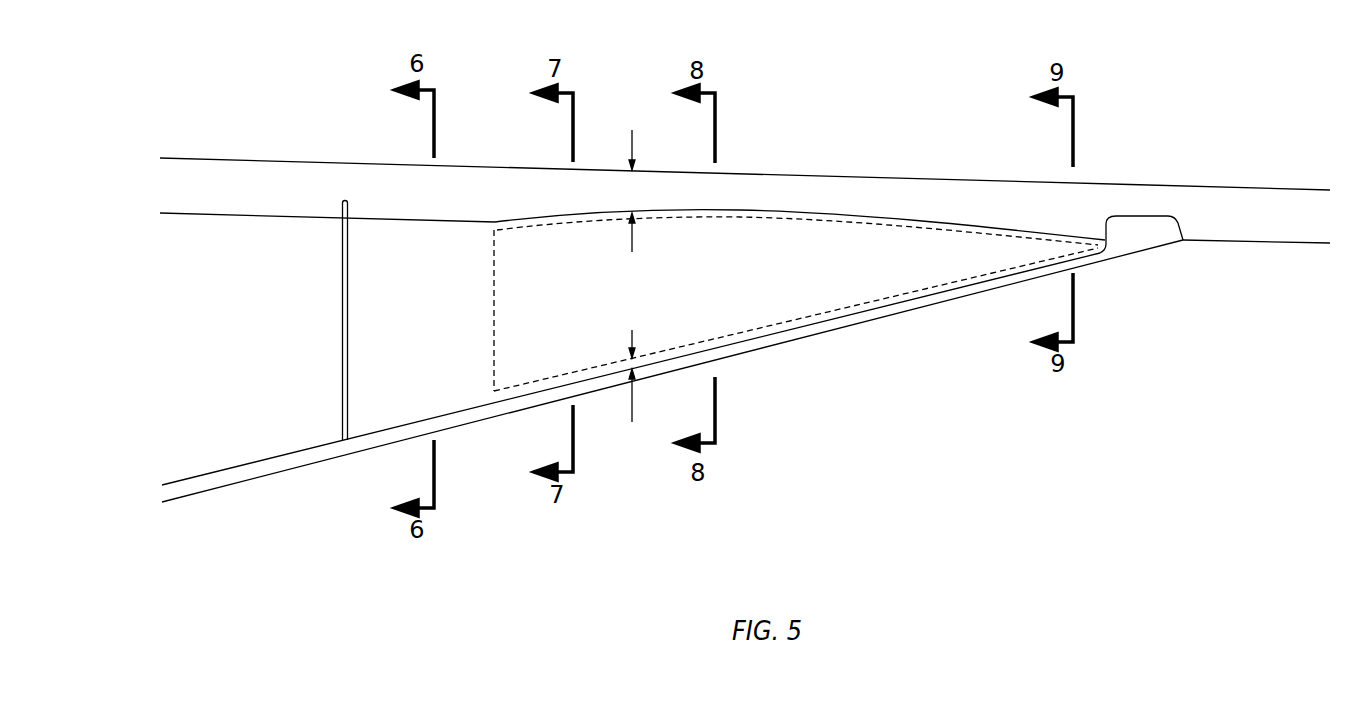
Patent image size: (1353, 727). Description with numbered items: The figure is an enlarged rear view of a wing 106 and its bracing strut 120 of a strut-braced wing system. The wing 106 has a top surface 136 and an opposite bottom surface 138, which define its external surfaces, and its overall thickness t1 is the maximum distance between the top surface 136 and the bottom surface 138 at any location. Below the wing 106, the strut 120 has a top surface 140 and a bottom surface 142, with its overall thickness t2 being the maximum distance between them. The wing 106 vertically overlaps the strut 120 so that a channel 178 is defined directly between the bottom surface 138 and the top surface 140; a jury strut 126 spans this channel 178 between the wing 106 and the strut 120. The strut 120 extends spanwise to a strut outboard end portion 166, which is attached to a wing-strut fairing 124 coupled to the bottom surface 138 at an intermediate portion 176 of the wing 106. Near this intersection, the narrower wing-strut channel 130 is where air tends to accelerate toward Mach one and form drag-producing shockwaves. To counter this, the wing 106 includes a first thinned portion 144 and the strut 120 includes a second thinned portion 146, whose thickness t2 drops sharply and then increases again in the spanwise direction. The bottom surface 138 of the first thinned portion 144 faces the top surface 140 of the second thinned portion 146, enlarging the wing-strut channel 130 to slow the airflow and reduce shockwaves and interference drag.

The wing 106 is at (633, 139).
The top surface 136 is at (245, 158).
The bottom surface 138 is at (262, 220).
The intermediate portion 176 is at (1138, 170).
The wing-strut fairing 124 is at (1140, 227).
The jury strut 126 is at (342, 268).
The channel 178 is at (745, 282).
The strut 120 is at (672, 398).
The top surface 140 is at (286, 454).
The bottom surface 142 is at (282, 473).
The wing-strut channel 130 is at (784, 342).
The first thinned portion 144 is at (762, 218).
The second thinned portion 146 is at (808, 318).
The strut outboard end portion 166 is at (824, 319).
The overall thickness t1 is at (632, 132).
The overall thickness t2 is at (632, 403).